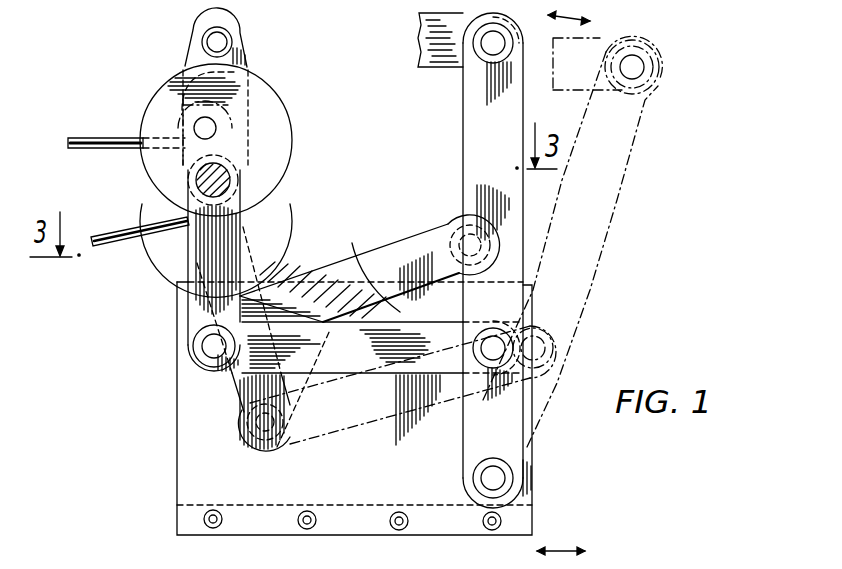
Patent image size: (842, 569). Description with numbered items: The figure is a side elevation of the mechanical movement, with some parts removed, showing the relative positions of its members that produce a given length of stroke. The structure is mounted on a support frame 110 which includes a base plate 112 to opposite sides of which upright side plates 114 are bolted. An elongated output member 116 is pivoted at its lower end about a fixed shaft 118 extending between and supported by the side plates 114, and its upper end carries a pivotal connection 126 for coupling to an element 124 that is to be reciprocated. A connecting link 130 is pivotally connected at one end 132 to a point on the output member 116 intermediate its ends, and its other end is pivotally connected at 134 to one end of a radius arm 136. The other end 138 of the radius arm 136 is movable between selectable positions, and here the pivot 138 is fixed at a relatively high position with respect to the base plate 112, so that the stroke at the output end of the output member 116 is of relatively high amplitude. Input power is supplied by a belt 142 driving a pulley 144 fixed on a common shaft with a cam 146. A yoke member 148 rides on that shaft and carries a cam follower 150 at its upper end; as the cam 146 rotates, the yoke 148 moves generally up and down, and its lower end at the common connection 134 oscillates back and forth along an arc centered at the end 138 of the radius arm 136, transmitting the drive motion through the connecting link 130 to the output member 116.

The support frame 110 is at (175, 403).
The base plate 112 is at (190, 536).
The upright side plates 114 is at (186, 465).
The output member 116 is at (463, 168).
The fixed shaft 118 is at (497, 480).
The element to be reciprocated 124 is at (435, 57).
The pivotal connection 126 is at (488, 48).
The connecting link 130 is at (398, 373).
The end of connecting link 132 is at (497, 343).
The commonly pivoted ends 134 is at (208, 350).
The radius arm 136 is at (368, 257).
The pivot of radius arm 138 is at (458, 233).
The belt 142 is at (118, 248).
The pulley 144 is at (182, 213).
The cam 146 is at (153, 107).
The yoke member 148 is at (213, 307).
The cam follower 150 is at (230, 39).